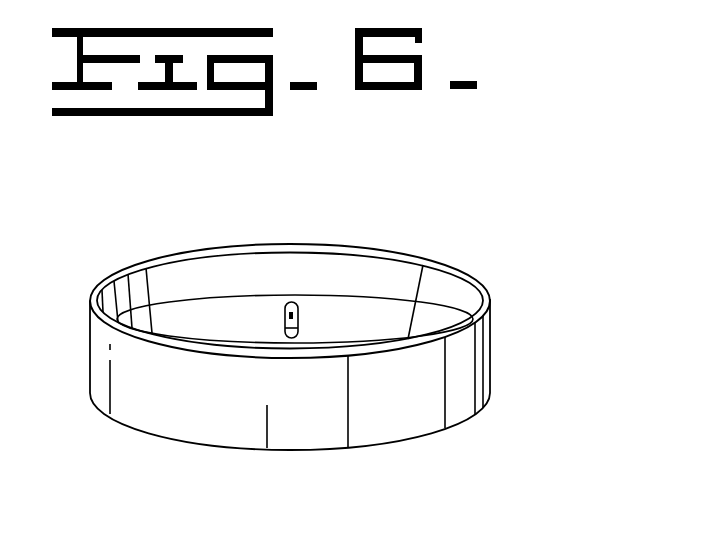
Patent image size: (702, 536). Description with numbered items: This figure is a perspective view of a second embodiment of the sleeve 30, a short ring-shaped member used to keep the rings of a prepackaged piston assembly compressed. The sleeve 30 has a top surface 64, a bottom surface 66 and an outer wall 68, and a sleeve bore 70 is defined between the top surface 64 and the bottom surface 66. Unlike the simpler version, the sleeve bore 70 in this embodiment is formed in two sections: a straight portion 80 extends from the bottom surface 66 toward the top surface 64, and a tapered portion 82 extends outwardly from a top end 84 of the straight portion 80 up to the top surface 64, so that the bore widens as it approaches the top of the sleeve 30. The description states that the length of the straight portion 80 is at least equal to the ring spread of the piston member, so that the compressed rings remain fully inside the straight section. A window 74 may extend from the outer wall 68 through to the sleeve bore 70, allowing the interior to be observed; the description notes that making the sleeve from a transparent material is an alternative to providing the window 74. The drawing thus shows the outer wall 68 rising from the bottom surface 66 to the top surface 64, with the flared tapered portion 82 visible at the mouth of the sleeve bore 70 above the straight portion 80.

The sleeve 30 is at (512, 428).
The top surface 64 is at (318, 246).
The bottom surface 66 is at (223, 448).
The outer wall 68 is at (152, 408).
The sleeve bore 70 is at (248, 296).
The window 74 is at (300, 318).
The straight portion 80 is at (192, 328).
The tapered portion 82 is at (385, 251).
The top end 84 is at (433, 312).